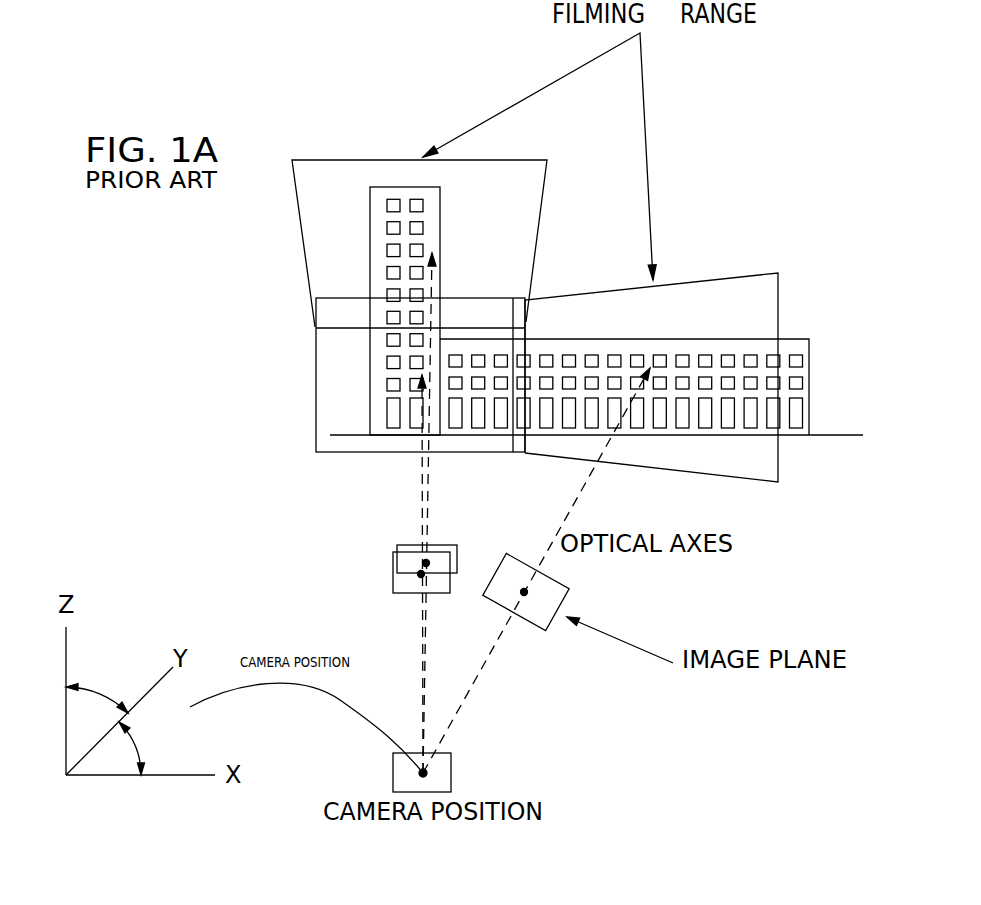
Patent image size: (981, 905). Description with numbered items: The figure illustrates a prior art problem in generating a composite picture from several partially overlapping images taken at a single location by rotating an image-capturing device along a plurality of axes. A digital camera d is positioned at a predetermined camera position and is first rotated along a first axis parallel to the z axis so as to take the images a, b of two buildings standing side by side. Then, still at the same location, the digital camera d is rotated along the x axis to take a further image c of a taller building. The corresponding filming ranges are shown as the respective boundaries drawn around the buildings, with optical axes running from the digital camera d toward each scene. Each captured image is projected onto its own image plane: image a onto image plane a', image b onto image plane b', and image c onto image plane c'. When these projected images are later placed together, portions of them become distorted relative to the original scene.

The image a is at (371, 375).
The image b is at (647, 377).
The image c is at (374, 274).
The digital camera d is at (443, 772).
The image plane a' is at (376, 583).
The image plane b' is at (554, 591).
The image plane c' is at (400, 533).